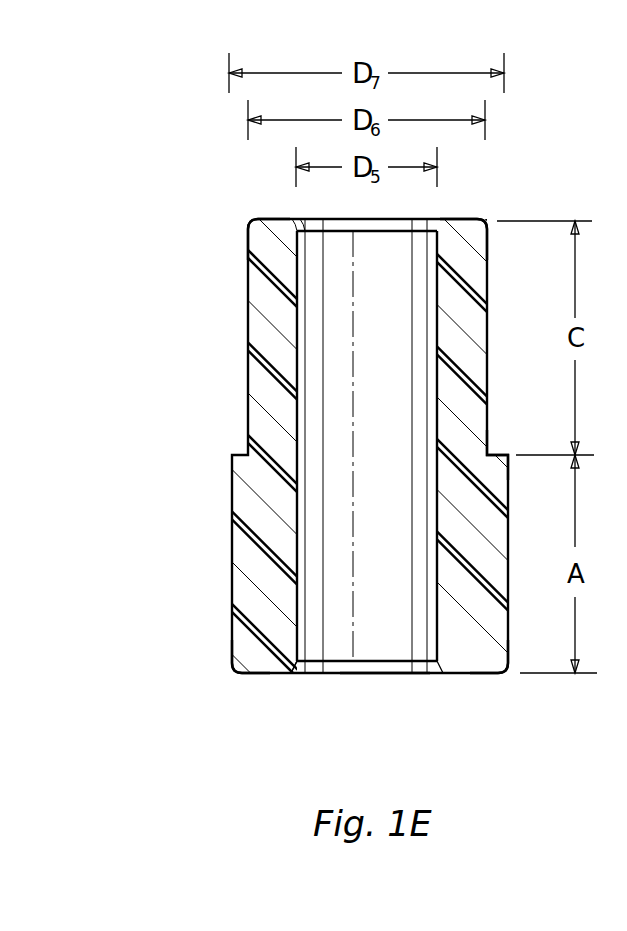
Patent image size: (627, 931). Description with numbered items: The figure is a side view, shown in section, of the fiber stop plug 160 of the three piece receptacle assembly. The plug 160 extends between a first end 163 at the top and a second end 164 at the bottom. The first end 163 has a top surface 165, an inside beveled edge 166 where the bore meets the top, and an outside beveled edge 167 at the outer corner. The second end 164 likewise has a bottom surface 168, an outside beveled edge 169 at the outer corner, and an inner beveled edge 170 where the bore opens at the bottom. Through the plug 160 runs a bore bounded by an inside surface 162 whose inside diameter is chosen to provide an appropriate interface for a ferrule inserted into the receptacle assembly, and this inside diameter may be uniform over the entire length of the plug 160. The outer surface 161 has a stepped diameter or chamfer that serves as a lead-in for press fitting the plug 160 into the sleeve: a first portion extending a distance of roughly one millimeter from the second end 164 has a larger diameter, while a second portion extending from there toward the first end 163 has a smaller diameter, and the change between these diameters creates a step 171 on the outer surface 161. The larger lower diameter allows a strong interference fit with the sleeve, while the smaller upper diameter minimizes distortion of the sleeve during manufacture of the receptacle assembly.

The plug 160 is at (224, 690).
The outer surface 161 is at (500, 675).
The inside surface 162 is at (440, 613).
The first end 163 is at (454, 213).
The second end 164 is at (322, 692).
The top surface 165 is at (310, 222).
The inside beveled edge 166 is at (298, 221).
The outside beveled edge 167 is at (242, 215).
The bottom surface 168 is at (385, 692).
The outside beveled edge 169 is at (238, 672).
The inner beveled edge 170 is at (293, 676).
The step 171 is at (508, 455).